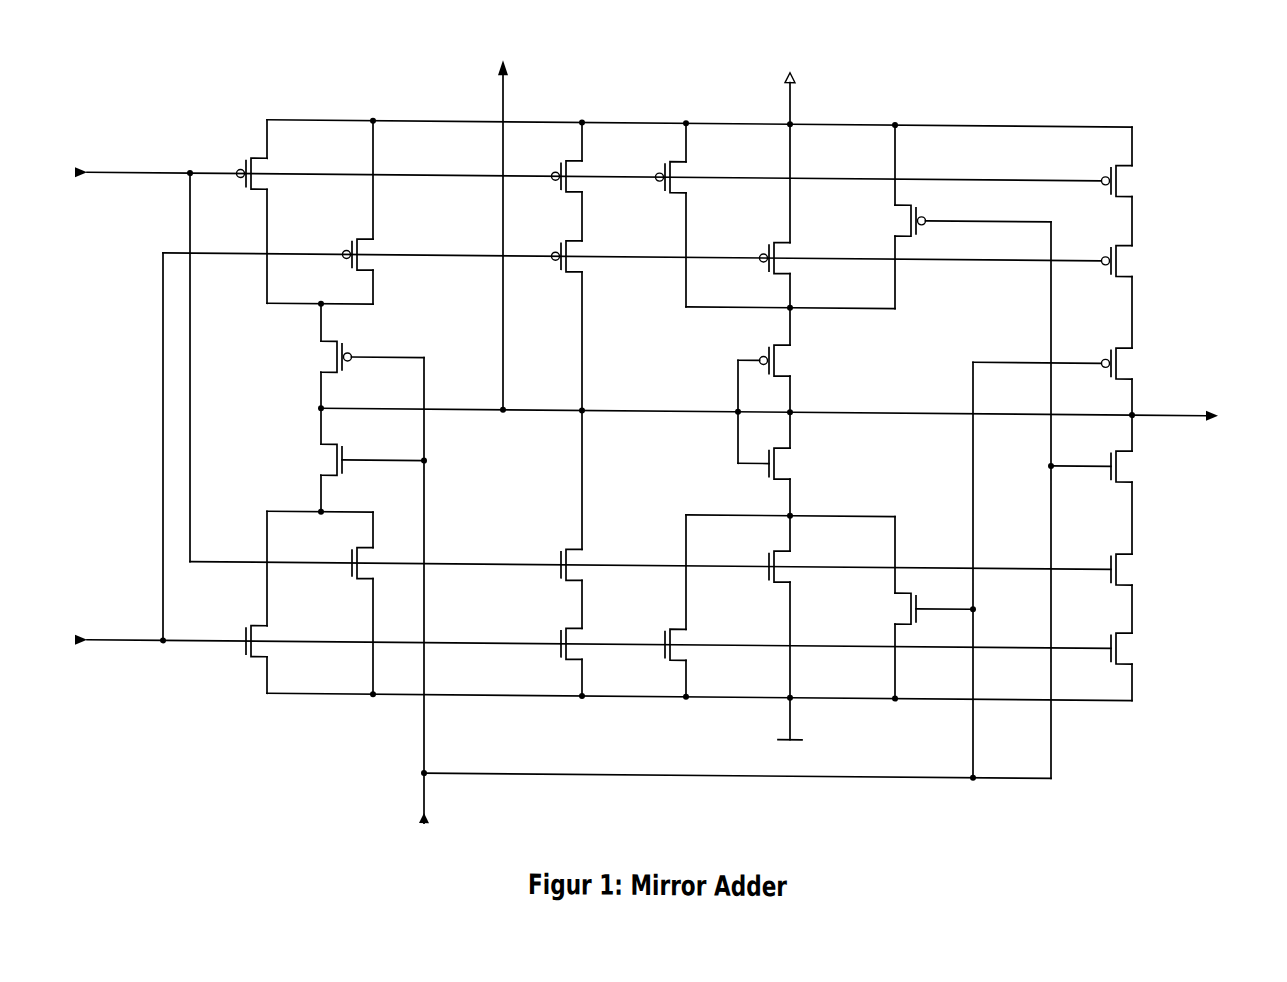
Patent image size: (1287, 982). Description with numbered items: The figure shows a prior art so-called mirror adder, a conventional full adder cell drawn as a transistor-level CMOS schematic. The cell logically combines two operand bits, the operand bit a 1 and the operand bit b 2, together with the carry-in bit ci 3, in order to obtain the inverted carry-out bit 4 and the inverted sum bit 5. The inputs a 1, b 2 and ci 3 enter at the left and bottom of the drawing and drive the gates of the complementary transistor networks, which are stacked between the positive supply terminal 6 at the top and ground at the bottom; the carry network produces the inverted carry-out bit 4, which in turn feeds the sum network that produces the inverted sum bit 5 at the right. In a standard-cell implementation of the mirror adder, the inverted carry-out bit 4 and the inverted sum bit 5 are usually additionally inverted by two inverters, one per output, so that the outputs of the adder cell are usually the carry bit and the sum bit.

The input a 1 is at (113, 172).
The input b 2 is at (99, 639).
The carry input ci 3 is at (424, 813).
The inverted carry output co_n 4 is at (503, 218).
The inverted sum output s_n 5 is at (1199, 415).
The supply VDD 6 is at (790, 93).